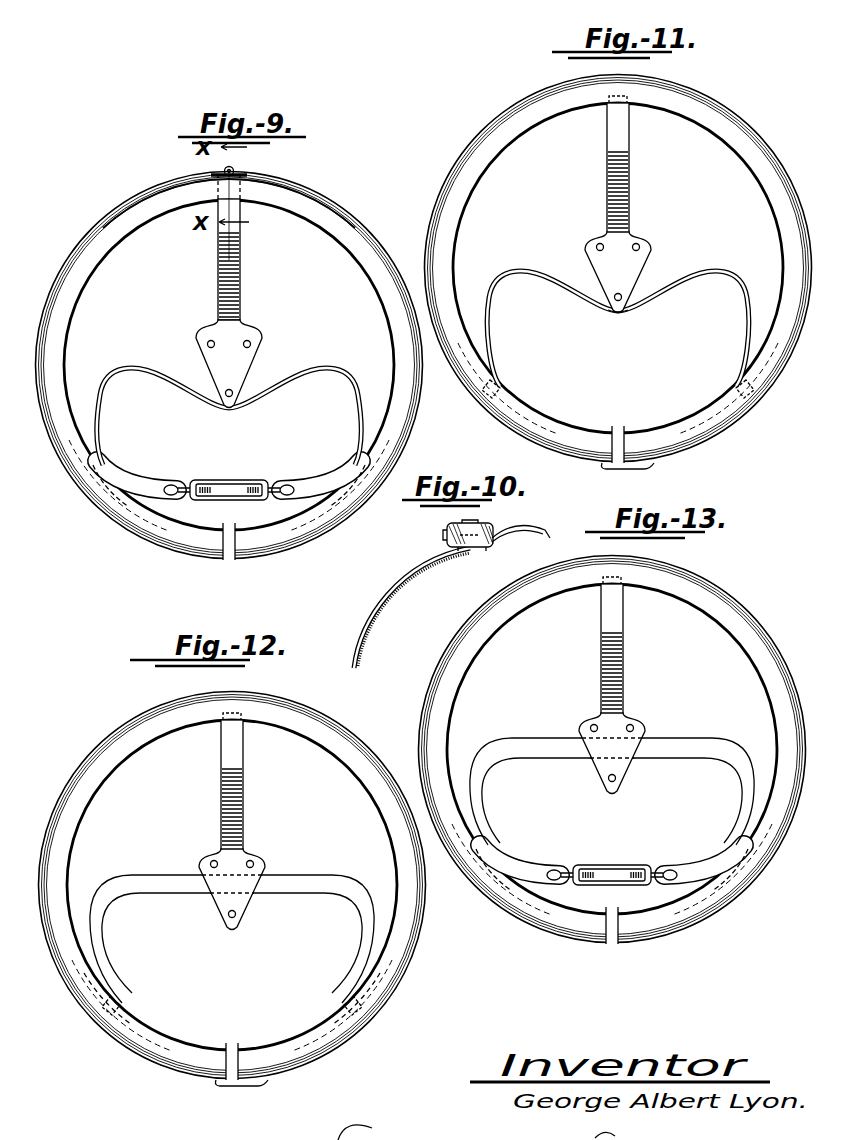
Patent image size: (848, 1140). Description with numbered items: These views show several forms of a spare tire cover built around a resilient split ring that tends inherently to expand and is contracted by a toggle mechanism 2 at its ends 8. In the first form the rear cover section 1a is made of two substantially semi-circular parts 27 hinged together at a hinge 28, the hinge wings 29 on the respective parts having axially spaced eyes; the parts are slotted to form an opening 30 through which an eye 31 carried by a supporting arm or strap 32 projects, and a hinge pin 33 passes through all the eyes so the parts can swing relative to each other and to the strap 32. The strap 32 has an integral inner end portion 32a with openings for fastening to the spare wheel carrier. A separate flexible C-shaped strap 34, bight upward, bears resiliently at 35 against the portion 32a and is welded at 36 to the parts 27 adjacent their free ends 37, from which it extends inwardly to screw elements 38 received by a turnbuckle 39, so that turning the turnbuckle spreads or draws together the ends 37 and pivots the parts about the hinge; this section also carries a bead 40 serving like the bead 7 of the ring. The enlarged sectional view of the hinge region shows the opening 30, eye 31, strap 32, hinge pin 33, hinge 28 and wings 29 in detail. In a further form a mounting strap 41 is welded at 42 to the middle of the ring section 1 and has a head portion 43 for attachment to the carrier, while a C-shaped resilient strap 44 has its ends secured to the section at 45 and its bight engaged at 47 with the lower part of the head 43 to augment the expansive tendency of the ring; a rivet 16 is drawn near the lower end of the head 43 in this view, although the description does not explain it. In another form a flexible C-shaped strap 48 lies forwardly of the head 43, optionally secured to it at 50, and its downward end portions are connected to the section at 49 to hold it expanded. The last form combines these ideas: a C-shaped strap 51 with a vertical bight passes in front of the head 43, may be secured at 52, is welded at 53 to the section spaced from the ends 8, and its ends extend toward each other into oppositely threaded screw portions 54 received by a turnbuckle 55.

In FIG. 10, the resilient split ring 1 is at (367, 593).
In FIG. 11, the resilient split ring 1 is at (618, 268).
In FIG. 12, the resilient split ring 1 is at (232, 885).
In FIG. 13, the resilient split ring 1 is at (612, 749).
In FIG. 9, the rear cover section 1a is at (229, 365).
In FIG. 11, the toggle mechanism 2 is at (643, 480).
In FIG. 12, the toggle mechanism 2 is at (246, 1100).
In FIG. 11, the bead 7 is at (618, 268).
In FIG. 12, the bead 7 is at (232, 885).
In FIG. 13, the bead 7 is at (612, 749).
In FIG. 9, the ends of the ring 8 is at (229, 541).
In FIG. 11, the ends of the ring 8 is at (615, 433).
In FIG. 12, the ends of the ring 8 is at (229, 1050).
In FIG. 13, the ends of the ring 8 is at (609, 914).
In FIG. 11, the rivet 16 is at (643, 320).
In FIG. 9, the semi-circular parts 27 is at (229, 365).
In FIG. 9, the hinge 28 is at (265, 158).
In FIG. 10, the hinge 28 is at (440, 539).
In FIG. 9, the hinge wings 29 is at (247, 167).
In FIG. 10, the hinge wings 29 is at (470, 522).
In FIG. 10, the opening 30 is at (486, 550).
In FIG. 10, the eye 31 is at (462, 550).
In FIG. 9, the supporting arm 32 is at (252, 244).
In FIG. 10, the supporting arm 32 is at (364, 664).
In FIG. 9, the inner end portion 32a is at (256, 364).
In FIG. 10, the hinge pin 33 is at (446, 540).
In FIG. 9, the strap 34 is at (229, 423).
In FIG. 9, the bearing point 35 is at (204, 377).
In FIG. 9, the weld 36 is at (229, 462).
In FIG. 9, the free ends 37 is at (229, 504).
In FIG. 9, the screw elements 38 is at (229, 461).
In FIG. 9, the turnbuckle 39 is at (229, 476).
In FIG. 9, the bead 40 is at (226, 203).
In FIG. 10, the bead 40 is at (530, 528).
In FIG. 11, the mounting strap 41 is at (643, 168).
In FIG. 12, the mounting strap 41 is at (258, 785).
In FIG. 13, the mounting strap 41 is at (640, 649).
In FIG. 11, the weld 42 is at (596, 119).
In FIG. 12, the weld 42 is at (210, 737).
In FIG. 13, the weld 42 is at (590, 601).
In FIG. 11, the head portion 43 is at (639, 272).
In FIG. 12, the head portion 43 is at (257, 887).
In FIG. 13, the head portion 43 is at (639, 749).
In FIG. 11, the resilient strap 44 is at (618, 313).
In FIG. 11, the securing points 45 is at (618, 383).
In FIG. 11, the engagement point 47 is at (643, 293).
In FIG. 12, the C-shaped strap 48 is at (232, 922).
In FIG. 12, the connection points 49 is at (232, 999).
In FIG. 12, the securing point 50 is at (220, 906).
In FIG. 13, the C-shaped strap 51 is at (612, 776).
In FIG. 13, the securing point 52 is at (601, 769).
In FIG. 13, the connection points 53 is at (599, 870).
In FIG. 13, the screw portions 54 is at (612, 848).
In FIG. 13, the turnbuckle 55 is at (612, 862).